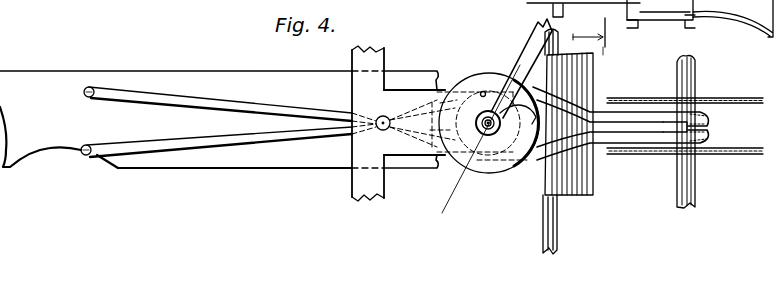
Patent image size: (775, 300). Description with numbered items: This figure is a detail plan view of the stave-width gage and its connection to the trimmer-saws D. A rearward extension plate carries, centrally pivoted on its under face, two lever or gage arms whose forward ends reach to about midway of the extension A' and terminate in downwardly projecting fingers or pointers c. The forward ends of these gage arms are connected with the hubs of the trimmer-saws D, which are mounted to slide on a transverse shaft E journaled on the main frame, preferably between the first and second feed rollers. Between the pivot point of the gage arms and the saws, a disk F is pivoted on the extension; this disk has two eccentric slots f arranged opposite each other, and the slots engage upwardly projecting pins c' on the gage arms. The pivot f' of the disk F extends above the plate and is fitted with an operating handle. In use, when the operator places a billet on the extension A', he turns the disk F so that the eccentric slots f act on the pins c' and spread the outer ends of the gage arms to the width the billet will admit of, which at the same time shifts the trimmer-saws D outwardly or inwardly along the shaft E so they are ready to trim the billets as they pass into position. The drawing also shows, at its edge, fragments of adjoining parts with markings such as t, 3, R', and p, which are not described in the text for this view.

The extension A' is at (227, 123).
The fingers or pointers c is at (382, 128).
The pins c' is at (492, 98).
The eccentric slots f is at (480, 153).
The pivot f' is at (467, 168).
The disk F is at (497, 173).
The trimmer-saws D is at (747, 98).
The transverse shaft E is at (678, 180).
The stop t is at (583, 25).
The section line 3 is at (607, 53).
The block R' is at (661, 14).
The pins p is at (669, 29).